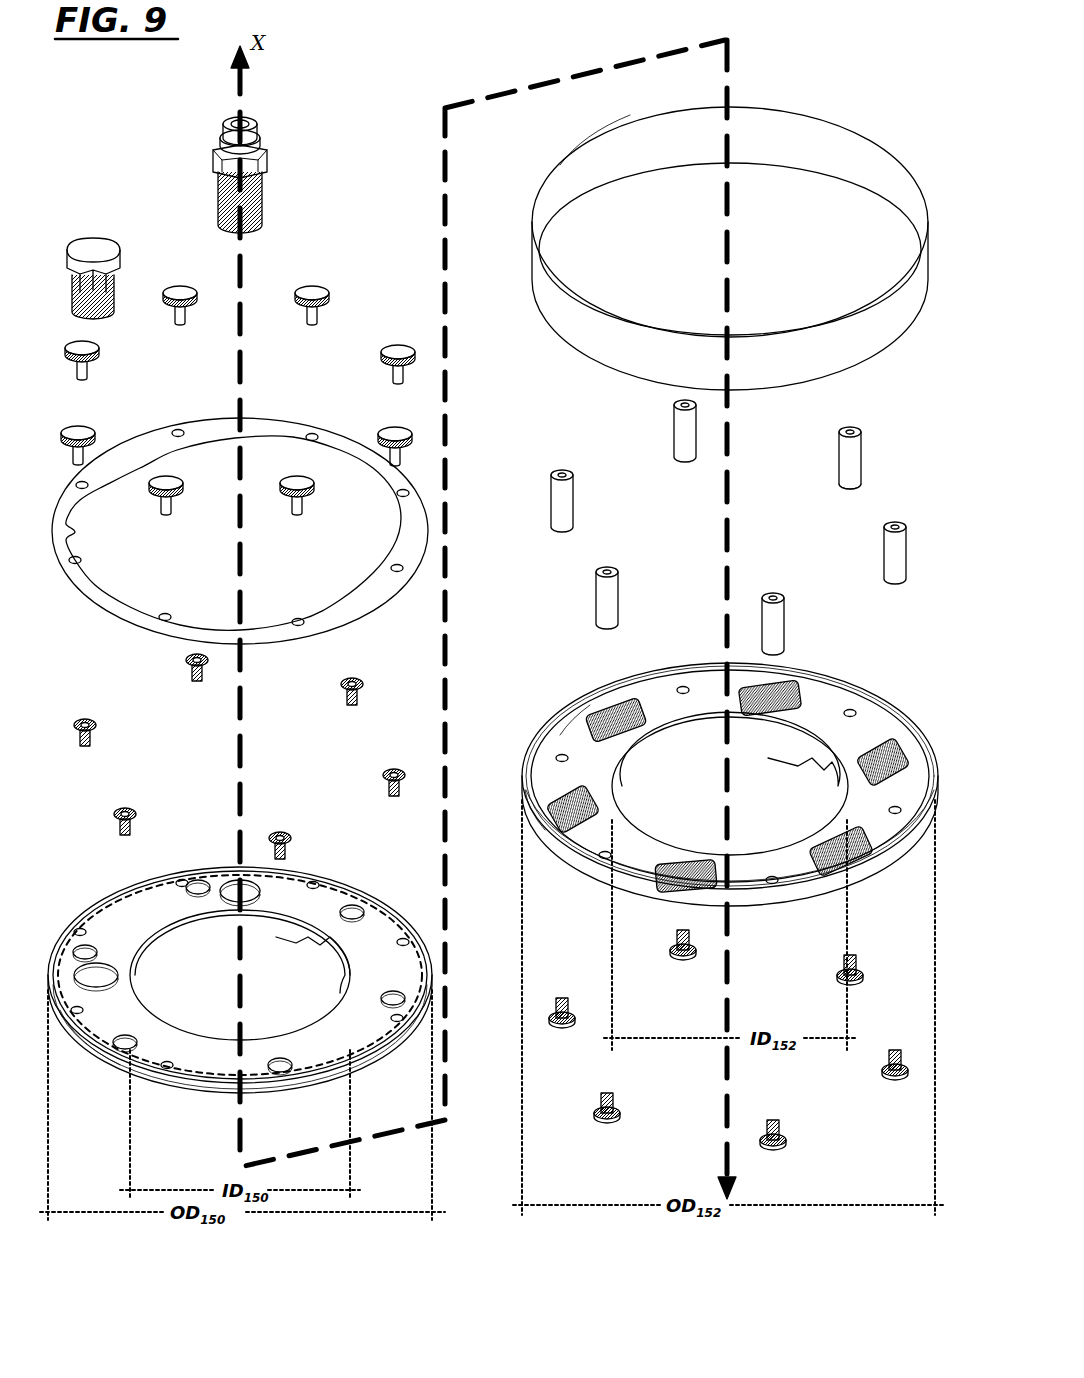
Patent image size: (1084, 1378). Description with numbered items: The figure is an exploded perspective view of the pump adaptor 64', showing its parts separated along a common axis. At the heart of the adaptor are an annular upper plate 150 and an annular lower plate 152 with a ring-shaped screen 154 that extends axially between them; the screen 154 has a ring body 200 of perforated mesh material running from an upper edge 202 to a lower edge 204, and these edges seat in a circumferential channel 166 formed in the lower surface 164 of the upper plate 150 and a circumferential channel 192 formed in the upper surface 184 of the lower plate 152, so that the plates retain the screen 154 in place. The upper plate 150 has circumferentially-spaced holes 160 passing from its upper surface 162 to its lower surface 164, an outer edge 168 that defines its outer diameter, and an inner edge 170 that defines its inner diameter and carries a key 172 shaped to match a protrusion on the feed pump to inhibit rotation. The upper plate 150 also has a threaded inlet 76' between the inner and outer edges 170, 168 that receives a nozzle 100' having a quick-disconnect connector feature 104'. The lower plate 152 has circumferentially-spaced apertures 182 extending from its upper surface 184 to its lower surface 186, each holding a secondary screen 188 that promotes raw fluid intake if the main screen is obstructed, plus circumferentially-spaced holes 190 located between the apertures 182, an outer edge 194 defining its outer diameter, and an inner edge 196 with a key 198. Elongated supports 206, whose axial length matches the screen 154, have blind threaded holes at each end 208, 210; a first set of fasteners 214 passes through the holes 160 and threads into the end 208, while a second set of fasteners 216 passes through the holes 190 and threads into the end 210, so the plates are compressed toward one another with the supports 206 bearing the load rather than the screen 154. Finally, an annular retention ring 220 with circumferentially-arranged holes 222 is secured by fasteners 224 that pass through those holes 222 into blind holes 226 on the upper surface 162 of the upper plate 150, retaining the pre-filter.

The pump adaptor 64' is at (482, 584).
The nozzle 100' is at (193, 167).
The quick-disconnect connector feature 104' is at (203, 127).
The upper plate 150 is at (269, 976).
The lower plate 152 is at (719, 794).
The screen 154 is at (733, 228).
The circumferentially-spaced holes 160 is at (350, 914).
The upper surface 162 is at (101, 938).
The lower surface 164 is at (100, 1060).
The circumferential channel 166 is at (115, 890).
The outer edge 168 is at (430, 990).
The inner edge 170 is at (195, 928).
The key 172 is at (294, 928).
The inlet 76' is at (263, 847).
The circumferentially-spaced apertures 182 is at (728, 758).
The upper surface 184 is at (888, 742).
The lower surface 186 is at (902, 856).
The secondary screen 188 is at (760, 706).
The circumferentially-spaced holes 190 is at (892, 810).
The circumferential channel 192 is at (560, 722).
The outer edge 194 is at (525, 780).
The inner edge 196 is at (650, 832).
The key 198 is at (786, 726).
The ring body 200 is at (868, 166).
The upper edge 202 is at (606, 126).
The lower edge 204 is at (694, 166).
The supports 206 is at (737, 524).
The end 208 is at (851, 430).
The end 210 is at (881, 473).
The first set of fasteners 214 is at (137, 800).
The second set of fasteners 216 is at (862, 990).
The annular retention ring 220 is at (240, 502).
The circumferentially-arranged holes 222 is at (300, 618).
The fasteners 224 is at (394, 416).
The blind holes 226 is at (398, 1016).